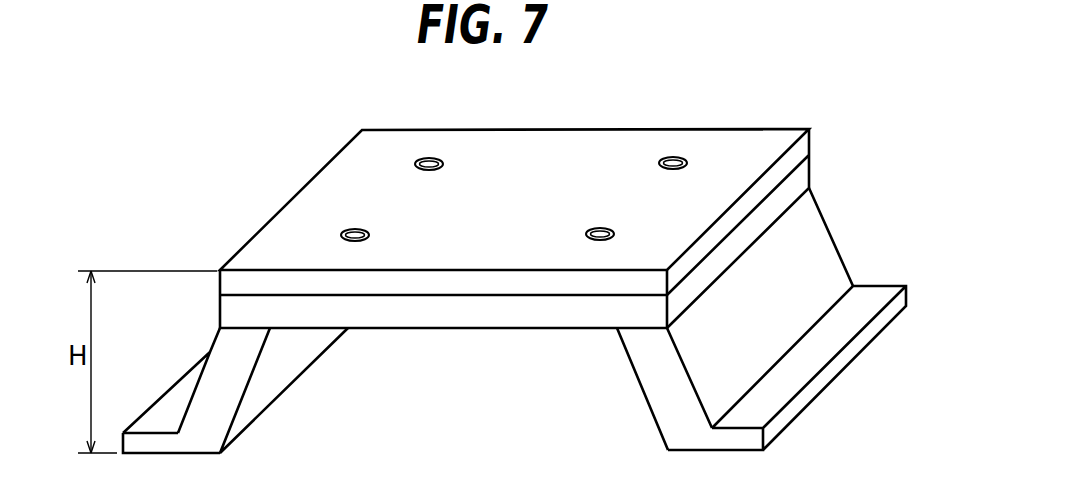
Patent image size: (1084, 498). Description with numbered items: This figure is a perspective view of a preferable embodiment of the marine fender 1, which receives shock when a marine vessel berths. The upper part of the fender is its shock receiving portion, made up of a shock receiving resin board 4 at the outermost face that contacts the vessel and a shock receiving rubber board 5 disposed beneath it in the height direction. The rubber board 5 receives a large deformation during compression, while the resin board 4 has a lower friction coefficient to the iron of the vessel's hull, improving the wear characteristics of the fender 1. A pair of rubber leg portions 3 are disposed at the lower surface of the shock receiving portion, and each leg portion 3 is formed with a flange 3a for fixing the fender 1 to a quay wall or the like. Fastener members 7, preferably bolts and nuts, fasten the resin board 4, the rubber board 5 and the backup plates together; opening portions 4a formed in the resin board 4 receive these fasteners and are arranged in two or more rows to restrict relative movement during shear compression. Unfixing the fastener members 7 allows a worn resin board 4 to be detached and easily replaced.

The marine fender 1 is at (811, 128).
The leg portion 3 is at (656, 423).
The flange 3a is at (817, 358).
The shock receiving resin board 4 is at (587, 146).
The opening portion 4a is at (675, 157).
The shock receiving rubber board 5 is at (462, 313).
The fastener member 7 is at (429, 158).